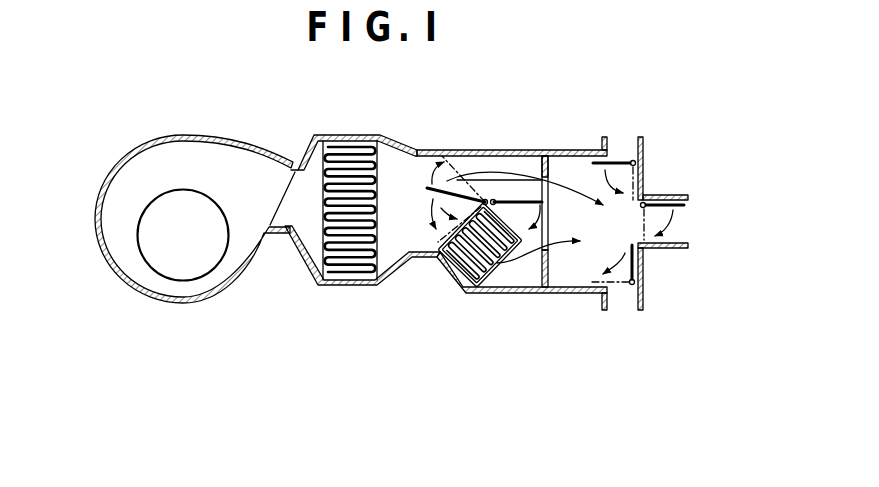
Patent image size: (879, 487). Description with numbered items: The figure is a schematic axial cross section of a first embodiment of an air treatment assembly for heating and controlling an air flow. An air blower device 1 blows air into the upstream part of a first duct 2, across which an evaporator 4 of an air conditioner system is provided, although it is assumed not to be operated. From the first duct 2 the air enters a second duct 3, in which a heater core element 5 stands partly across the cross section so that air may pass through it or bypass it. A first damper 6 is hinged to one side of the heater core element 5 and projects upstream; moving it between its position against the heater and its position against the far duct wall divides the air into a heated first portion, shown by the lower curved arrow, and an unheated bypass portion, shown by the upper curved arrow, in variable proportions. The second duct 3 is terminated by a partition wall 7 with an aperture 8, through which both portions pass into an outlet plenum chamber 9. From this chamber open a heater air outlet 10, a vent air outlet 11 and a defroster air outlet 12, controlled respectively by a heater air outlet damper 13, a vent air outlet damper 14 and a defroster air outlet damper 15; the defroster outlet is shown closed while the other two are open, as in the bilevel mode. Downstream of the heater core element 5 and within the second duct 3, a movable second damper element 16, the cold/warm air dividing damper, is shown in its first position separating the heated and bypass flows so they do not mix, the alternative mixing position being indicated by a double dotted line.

The air blower device 1 is at (227, 153).
The first duct 2 is at (350, 135).
The second duct 3 is at (507, 150).
The evaporator 4 is at (350, 268).
The heater core element 5 is at (458, 267).
The first damper 6 is at (471, 174).
The partition wall 7 is at (548, 265).
The aperture 8 is at (549, 207).
The outlet plenum chamber 9 is at (584, 256).
The heater air outlet 10 is at (623, 303).
The vent air outlet 11 is at (678, 235).
The defroster air outlet 12 is at (624, 144).
The heater air outlet damper 13 is at (631, 255).
The vent air outlet damper 14 is at (690, 211).
The defroster air outlet damper 15 is at (619, 167).
The second damper element 16 is at (528, 201).